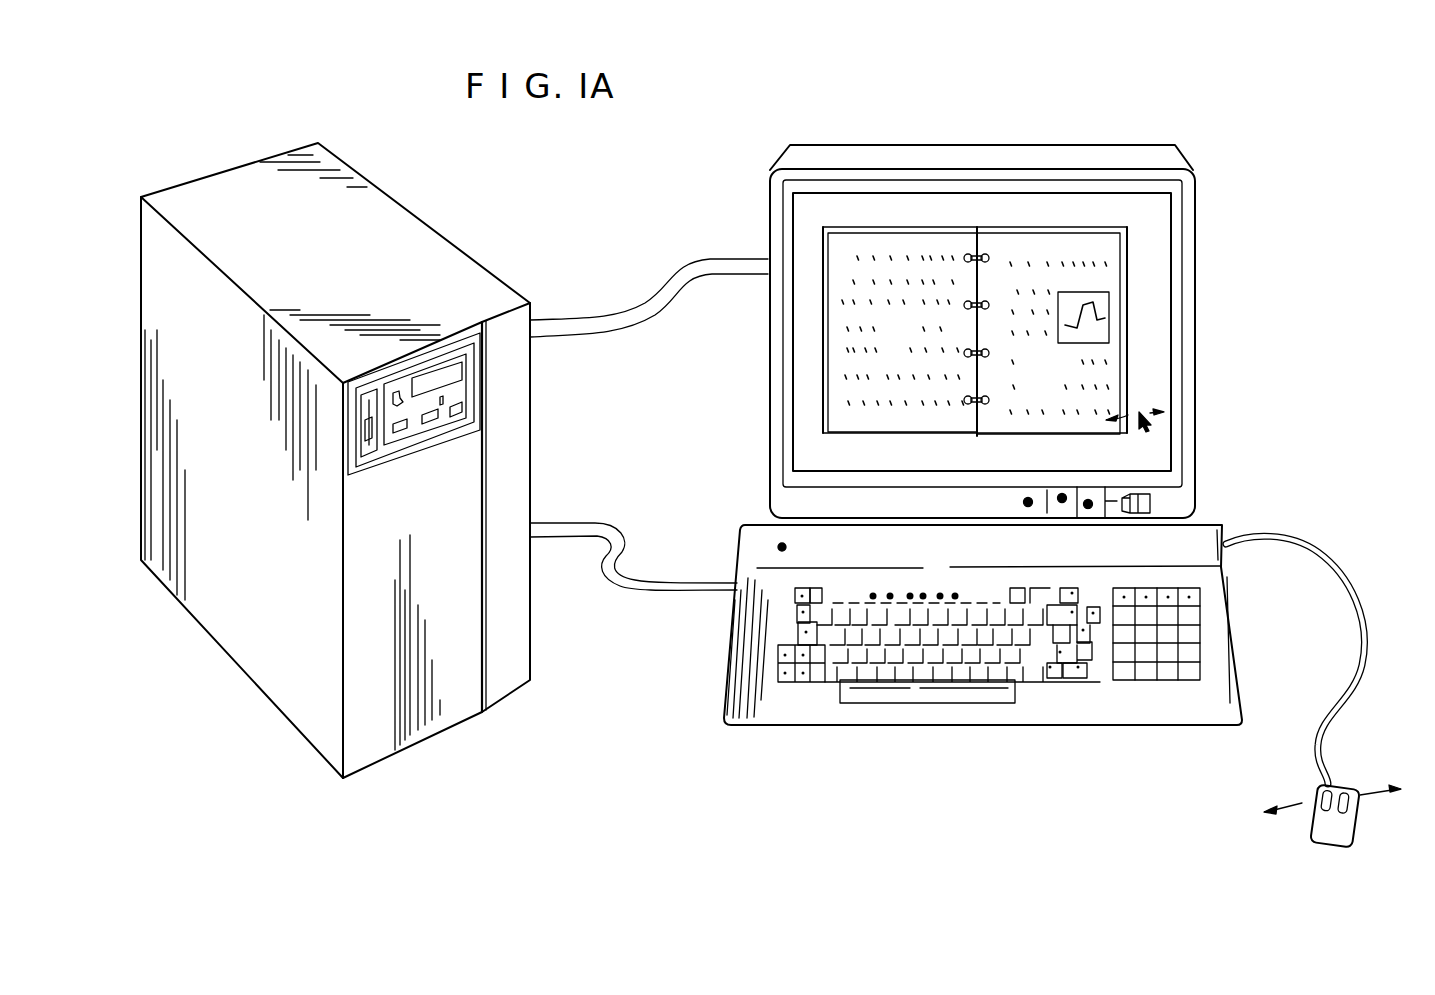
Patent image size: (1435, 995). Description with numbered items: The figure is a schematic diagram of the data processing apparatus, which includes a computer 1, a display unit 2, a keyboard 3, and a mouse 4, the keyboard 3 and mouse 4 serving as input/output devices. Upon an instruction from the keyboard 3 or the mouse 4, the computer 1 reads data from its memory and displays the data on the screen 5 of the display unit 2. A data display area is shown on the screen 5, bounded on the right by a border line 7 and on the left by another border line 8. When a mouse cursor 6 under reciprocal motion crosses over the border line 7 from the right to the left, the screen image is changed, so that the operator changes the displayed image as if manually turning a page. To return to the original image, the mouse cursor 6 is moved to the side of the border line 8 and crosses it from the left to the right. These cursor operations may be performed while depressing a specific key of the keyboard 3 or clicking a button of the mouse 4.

The computer 1 is at (305, 740).
The display unit 2 is at (1150, 146).
The keyboard 3 is at (1087, 718).
The mouse 4 is at (1320, 828).
The screen 5 is at (878, 205).
The mouse cursor 6 is at (1152, 422).
The border line 7 is at (1127, 257).
The border line 8 is at (823, 358).